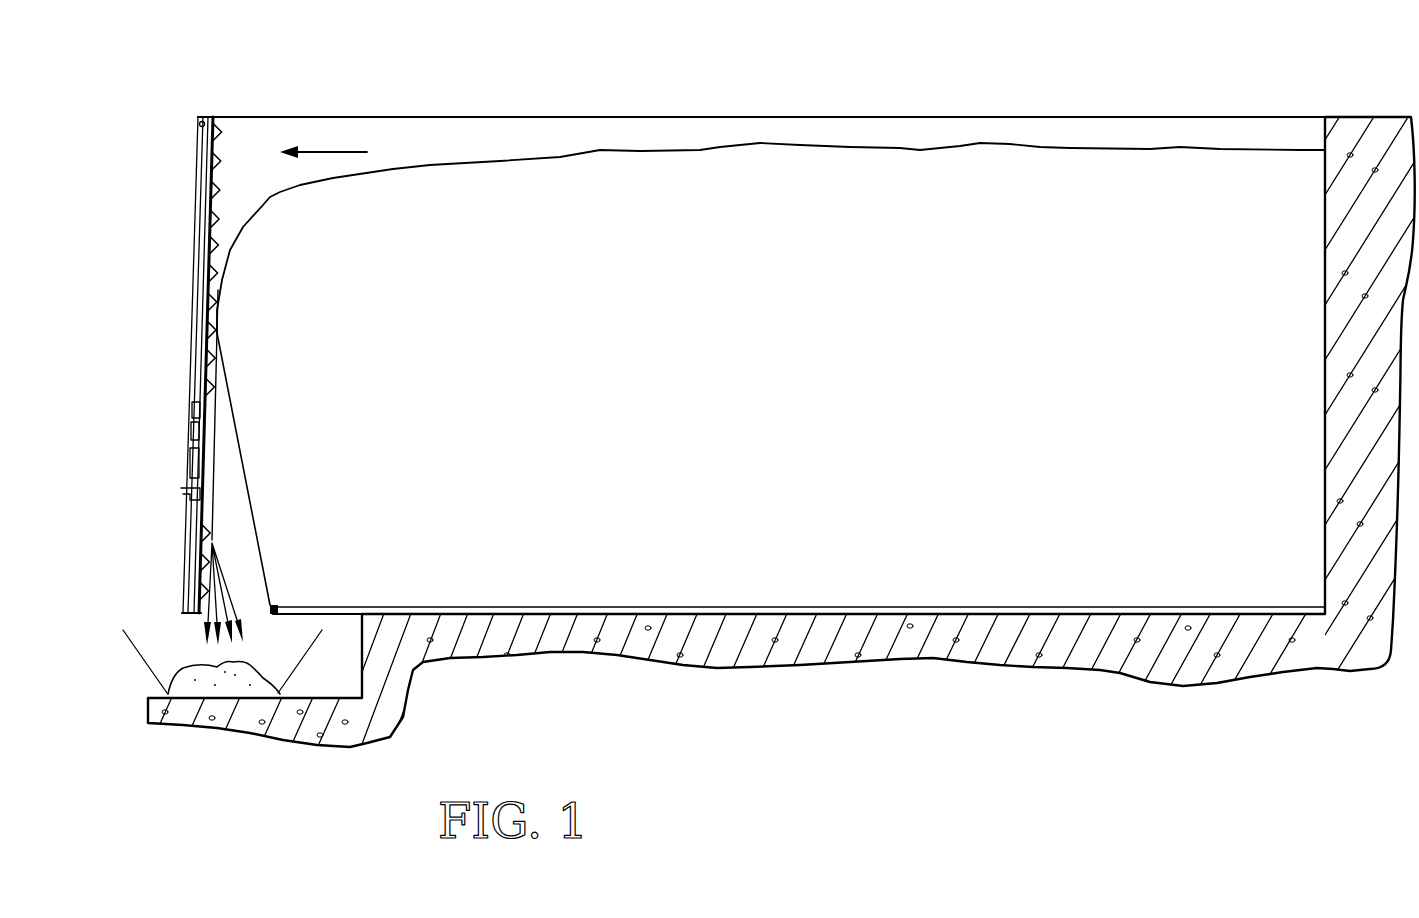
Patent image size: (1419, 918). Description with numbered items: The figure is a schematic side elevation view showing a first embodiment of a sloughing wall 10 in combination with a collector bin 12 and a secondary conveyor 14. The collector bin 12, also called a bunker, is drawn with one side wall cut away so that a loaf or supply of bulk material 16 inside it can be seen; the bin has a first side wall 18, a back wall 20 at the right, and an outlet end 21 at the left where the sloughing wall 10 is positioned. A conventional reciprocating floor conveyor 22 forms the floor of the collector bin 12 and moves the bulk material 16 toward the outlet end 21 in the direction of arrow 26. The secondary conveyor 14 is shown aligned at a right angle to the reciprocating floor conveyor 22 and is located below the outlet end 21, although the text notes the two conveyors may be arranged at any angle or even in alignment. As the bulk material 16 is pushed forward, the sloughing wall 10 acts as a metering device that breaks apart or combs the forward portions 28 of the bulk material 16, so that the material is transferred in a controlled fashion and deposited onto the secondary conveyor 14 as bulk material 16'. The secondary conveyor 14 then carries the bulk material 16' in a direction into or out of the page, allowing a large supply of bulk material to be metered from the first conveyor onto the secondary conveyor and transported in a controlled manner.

The sloughing wall 10 is at (152, 270).
The collector bin 12 is at (727, 130).
The secondary conveyor 14 is at (174, 714).
The bulk material 16 is at (771, 391).
The bulk material 16' is at (233, 724).
The first side wall 18 is at (405, 127).
The back wall 20 is at (1326, 138).
The outlet end 21 is at (213, 95).
The reciprocating floor conveyor 22 is at (707, 610).
The arrow 26 is at (329, 152).
The forward portions 28 is at (245, 366).